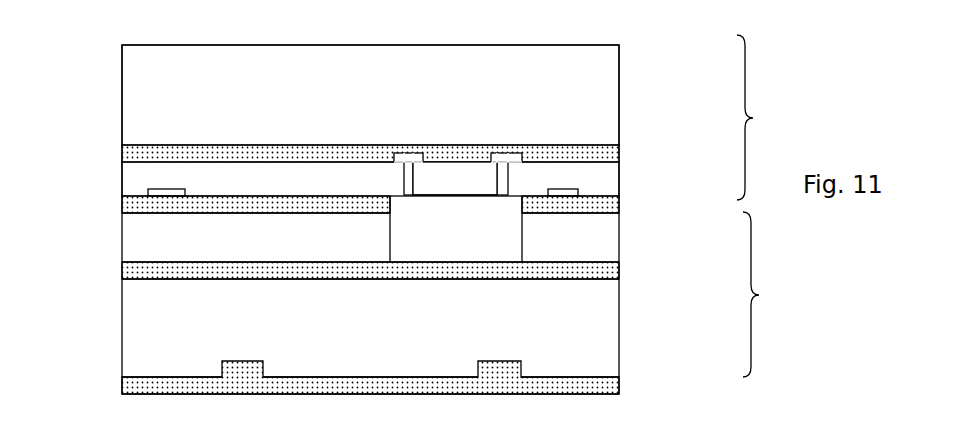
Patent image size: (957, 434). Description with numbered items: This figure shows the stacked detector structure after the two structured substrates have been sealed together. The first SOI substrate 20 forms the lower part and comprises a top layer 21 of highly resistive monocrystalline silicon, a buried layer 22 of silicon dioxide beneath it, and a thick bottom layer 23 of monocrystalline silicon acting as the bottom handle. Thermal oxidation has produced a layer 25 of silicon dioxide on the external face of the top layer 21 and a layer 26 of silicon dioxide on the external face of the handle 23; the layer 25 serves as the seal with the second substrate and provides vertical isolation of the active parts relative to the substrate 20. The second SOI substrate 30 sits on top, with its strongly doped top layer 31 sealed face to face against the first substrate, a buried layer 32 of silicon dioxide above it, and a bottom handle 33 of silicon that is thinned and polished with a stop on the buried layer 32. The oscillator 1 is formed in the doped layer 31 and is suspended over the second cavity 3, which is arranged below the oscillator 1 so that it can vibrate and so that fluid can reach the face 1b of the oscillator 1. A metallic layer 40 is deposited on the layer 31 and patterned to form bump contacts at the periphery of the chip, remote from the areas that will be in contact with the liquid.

The oscillator 1 is at (460, 182).
The face of the oscillator 1b is at (438, 196).
The second cavity 3 is at (443, 242).
The first SOI substrate 20 is at (766, 294).
The top layer 21 is at (603, 237).
The buried layer 22 is at (600, 270).
The bottom layer 23 is at (583, 355).
The layer of SiO2 25 is at (143, 204).
The layer of SiO2 26 is at (140, 383).
The second SOI substrate 30 is at (760, 117).
The top layer 31 is at (595, 178).
The buried layer 32 is at (617, 147).
The bottom handle 33 is at (615, 112).
The metallic layer 40 is at (693, 433).